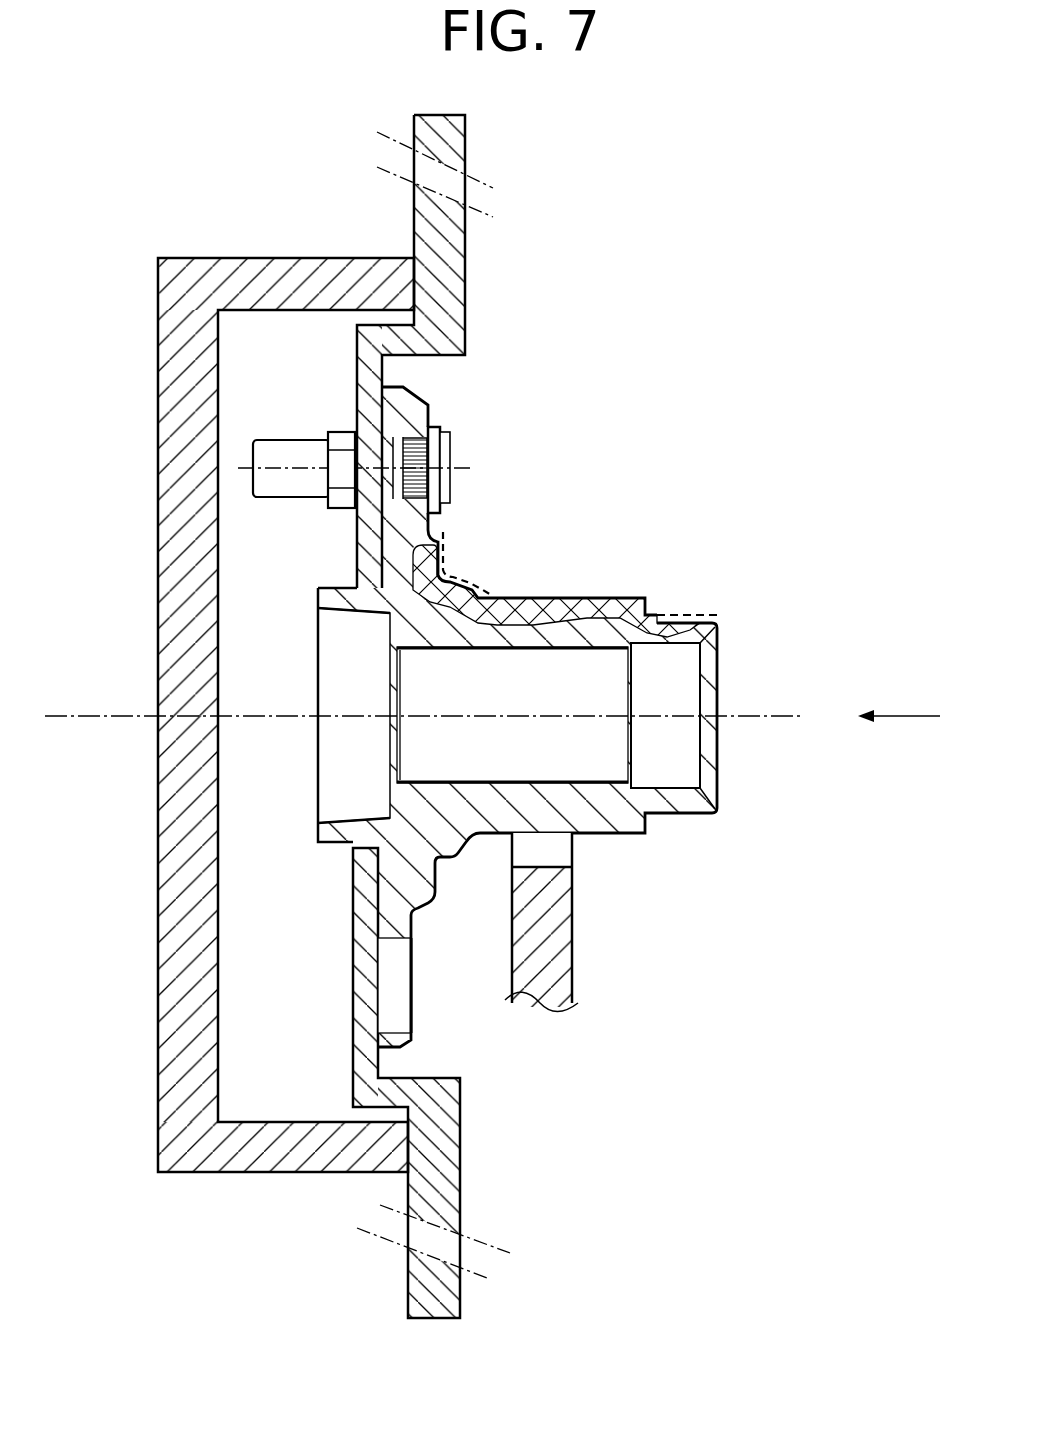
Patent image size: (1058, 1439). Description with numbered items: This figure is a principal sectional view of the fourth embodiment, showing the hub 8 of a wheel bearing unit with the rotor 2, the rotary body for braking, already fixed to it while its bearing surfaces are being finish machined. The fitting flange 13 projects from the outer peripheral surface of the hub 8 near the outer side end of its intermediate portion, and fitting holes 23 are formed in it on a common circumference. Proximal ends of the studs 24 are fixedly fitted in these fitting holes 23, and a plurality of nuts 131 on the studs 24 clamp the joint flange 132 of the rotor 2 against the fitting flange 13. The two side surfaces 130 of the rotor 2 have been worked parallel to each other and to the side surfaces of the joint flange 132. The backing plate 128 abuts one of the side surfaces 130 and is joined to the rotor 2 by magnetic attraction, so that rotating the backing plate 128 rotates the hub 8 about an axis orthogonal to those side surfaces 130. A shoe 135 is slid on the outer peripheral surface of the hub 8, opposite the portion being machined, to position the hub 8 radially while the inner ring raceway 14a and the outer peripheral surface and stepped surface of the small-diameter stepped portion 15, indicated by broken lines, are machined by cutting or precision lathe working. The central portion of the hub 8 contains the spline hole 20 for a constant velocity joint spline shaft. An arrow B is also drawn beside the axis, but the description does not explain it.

The rotor 2 is at (465, 283).
The hub 8 is at (477, 717).
The fitting flange 13 is at (430, 407).
The inner ring raceway 14a is at (473, 583).
The small-diameter stepped portion 15 is at (677, 612).
The spline hole 20 is at (477, 783).
The fitting holes 23 is at (353, 427).
The studs 24 is at (450, 443).
The backing plate 128 is at (187, 938).
The side surfaces of the rotor 130 is at (413, 282).
The nuts 131 is at (323, 503).
The joint flange 132 is at (373, 547).
The shoe 135 is at (573, 943).
The direction arrow B is at (901, 705).